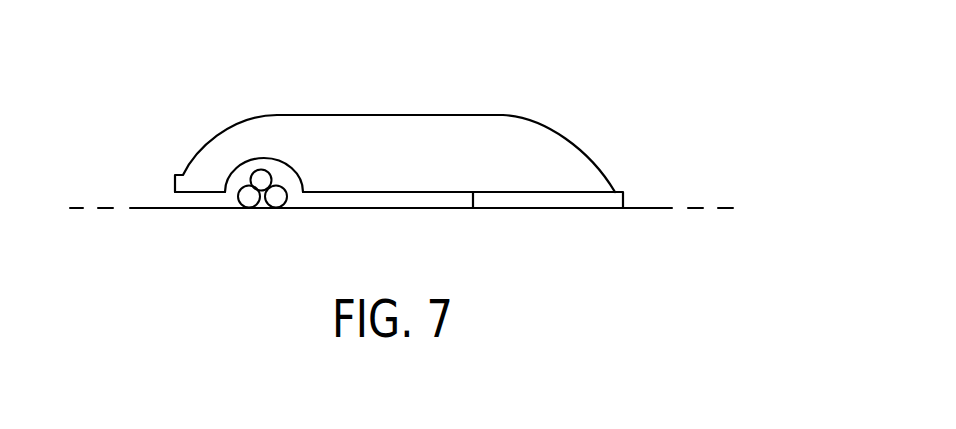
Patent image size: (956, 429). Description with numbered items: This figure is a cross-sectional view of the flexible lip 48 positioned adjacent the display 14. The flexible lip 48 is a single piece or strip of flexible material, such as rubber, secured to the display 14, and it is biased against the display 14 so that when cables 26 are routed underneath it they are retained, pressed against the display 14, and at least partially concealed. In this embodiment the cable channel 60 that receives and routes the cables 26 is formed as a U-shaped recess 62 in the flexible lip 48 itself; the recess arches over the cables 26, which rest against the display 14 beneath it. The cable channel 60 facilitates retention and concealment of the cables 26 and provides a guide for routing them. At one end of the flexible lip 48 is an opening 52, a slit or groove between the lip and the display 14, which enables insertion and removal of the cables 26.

The display 14 is at (140, 208).
The cables 26 is at (293, 197).
The flexible lip 48 is at (477, 135).
The opening 52 is at (175, 199).
The cable channel 60 is at (282, 147).
The U-shaped recess 62 is at (290, 170).